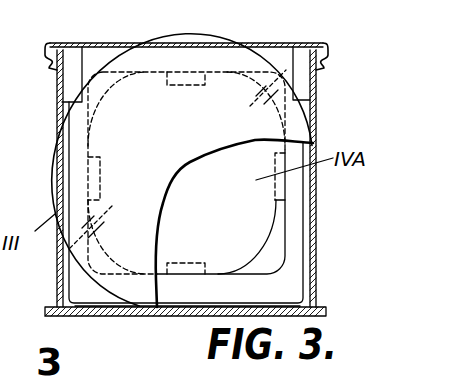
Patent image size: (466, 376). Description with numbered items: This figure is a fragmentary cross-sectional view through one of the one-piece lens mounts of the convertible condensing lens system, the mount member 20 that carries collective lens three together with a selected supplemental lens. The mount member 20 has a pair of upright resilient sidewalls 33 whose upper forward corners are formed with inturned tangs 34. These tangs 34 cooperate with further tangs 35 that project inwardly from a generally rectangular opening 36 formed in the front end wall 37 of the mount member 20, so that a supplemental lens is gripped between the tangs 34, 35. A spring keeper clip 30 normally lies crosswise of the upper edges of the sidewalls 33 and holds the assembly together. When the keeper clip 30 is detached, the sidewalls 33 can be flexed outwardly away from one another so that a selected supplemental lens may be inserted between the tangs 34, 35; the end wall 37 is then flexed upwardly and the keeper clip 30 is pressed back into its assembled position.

The lens mount 20 is at (316, 254).
The spring keeper clip 30 is at (122, 44).
The upright resilient sidewalls 33 is at (58, 106).
The inturned tangs 34 is at (72, 58).
The tangs 35 is at (100, 160).
The rectangular opening 36 is at (285, 238).
The front end wall 37 is at (296, 289).